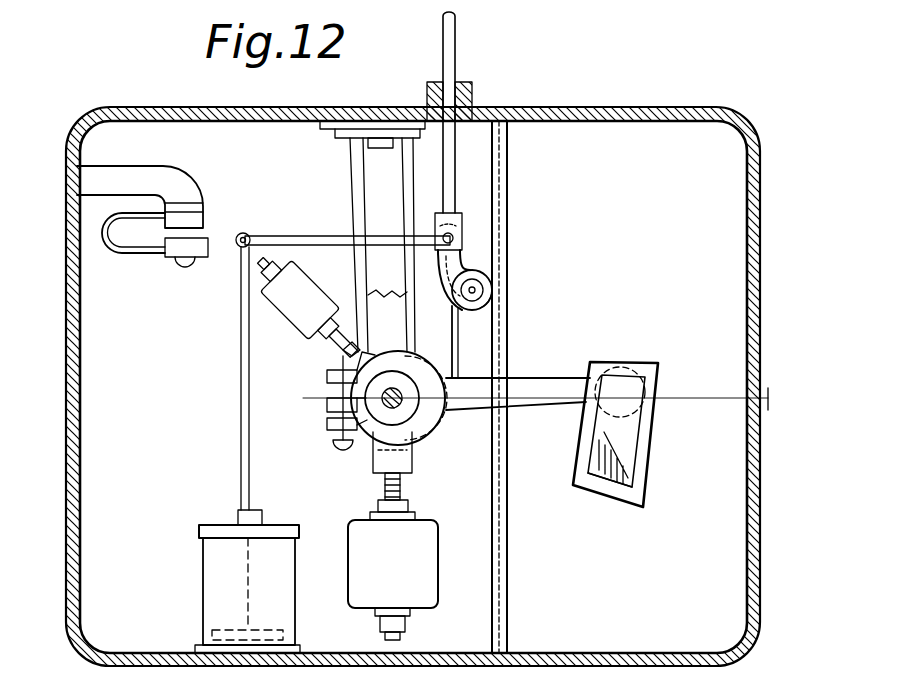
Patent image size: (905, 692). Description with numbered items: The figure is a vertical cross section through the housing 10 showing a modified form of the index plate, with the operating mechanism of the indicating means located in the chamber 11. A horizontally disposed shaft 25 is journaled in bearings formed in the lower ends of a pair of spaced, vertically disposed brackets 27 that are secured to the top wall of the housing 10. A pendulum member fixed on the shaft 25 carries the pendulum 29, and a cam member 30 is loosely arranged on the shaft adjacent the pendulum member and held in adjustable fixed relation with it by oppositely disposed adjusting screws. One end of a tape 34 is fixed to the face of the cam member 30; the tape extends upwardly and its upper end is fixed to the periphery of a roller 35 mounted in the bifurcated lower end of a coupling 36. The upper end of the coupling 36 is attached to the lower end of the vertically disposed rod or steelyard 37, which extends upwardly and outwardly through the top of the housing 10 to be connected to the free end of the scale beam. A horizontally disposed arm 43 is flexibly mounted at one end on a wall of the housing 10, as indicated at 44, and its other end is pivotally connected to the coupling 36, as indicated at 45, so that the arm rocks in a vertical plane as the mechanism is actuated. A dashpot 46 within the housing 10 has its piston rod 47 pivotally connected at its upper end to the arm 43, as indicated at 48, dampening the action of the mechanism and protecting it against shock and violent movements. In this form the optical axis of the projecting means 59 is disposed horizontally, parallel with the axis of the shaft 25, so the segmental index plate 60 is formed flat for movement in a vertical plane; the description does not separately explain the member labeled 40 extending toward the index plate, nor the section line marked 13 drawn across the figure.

The housing 10 is at (100, 107).
The chamber 11 is at (96, 491).
The casing / section line 13 is at (525, 398).
The shaft 25 is at (362, 438).
The brackets 27 is at (372, 176).
The pendulum 29 is at (393, 580).
The cam member 30 is at (440, 425).
The tape 34 is at (458, 344).
The roller 35 is at (492, 293).
The coupling 36 is at (456, 264).
The rod or steelyard 37 is at (456, 52).
The float arm 40 is at (542, 404).
The arm 43 is at (320, 228).
The flexible mounting 44 is at (128, 256).
The pivotal connection 45 is at (452, 237).
The dashpot 46 is at (208, 583).
The piston rod 47 is at (240, 446).
The pivotal connection 48 is at (246, 233).
The projecting means 59 is at (630, 384).
The segmental index plate 60 is at (632, 488).